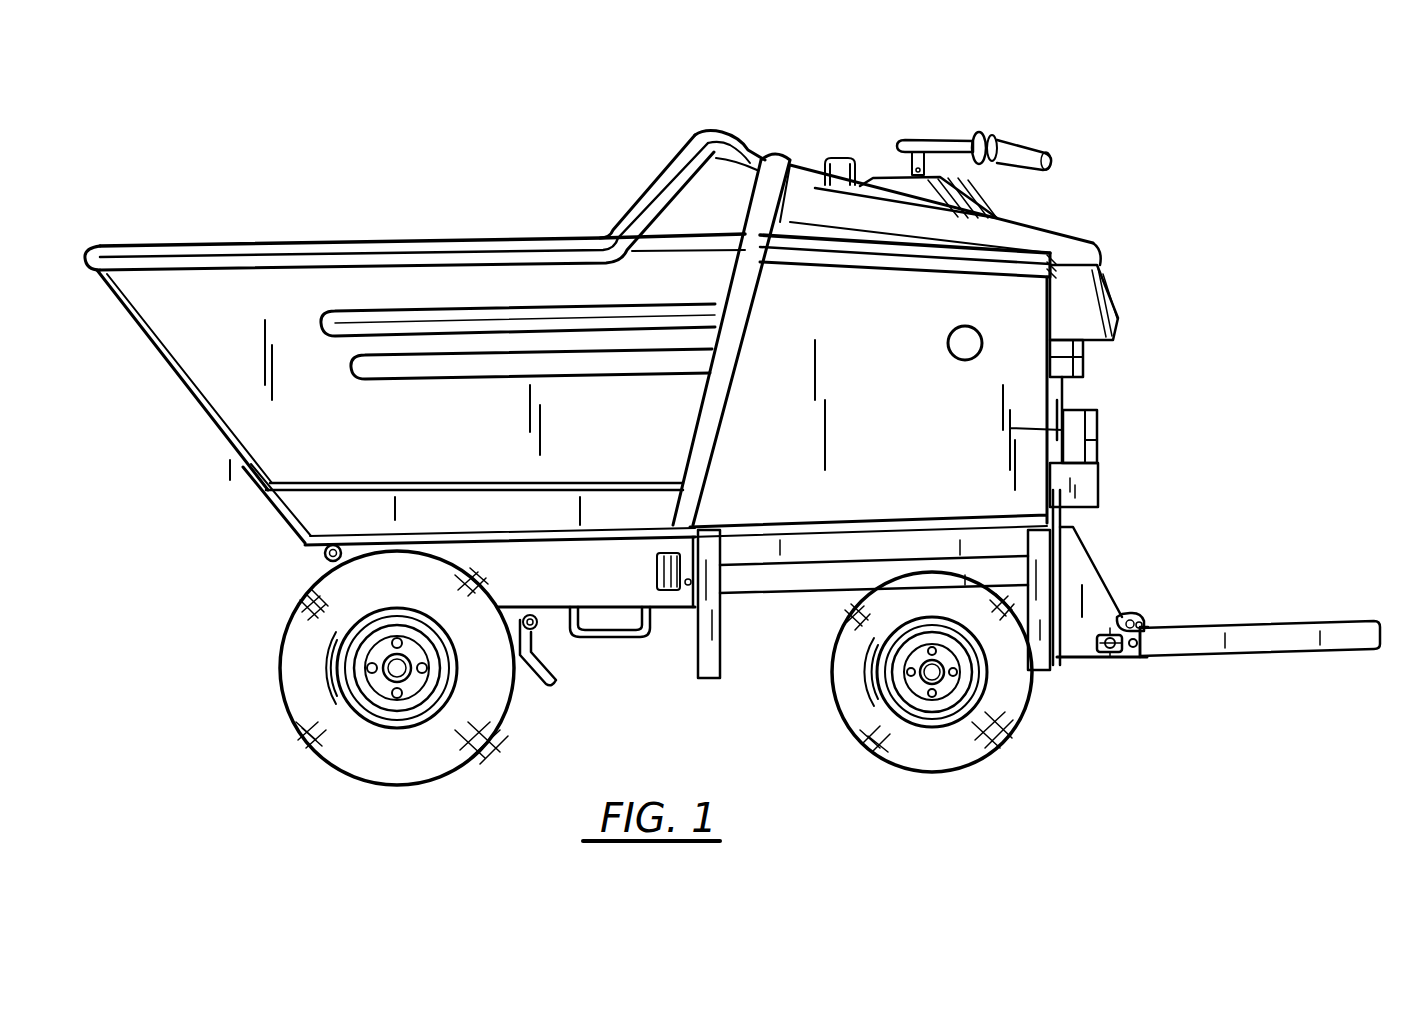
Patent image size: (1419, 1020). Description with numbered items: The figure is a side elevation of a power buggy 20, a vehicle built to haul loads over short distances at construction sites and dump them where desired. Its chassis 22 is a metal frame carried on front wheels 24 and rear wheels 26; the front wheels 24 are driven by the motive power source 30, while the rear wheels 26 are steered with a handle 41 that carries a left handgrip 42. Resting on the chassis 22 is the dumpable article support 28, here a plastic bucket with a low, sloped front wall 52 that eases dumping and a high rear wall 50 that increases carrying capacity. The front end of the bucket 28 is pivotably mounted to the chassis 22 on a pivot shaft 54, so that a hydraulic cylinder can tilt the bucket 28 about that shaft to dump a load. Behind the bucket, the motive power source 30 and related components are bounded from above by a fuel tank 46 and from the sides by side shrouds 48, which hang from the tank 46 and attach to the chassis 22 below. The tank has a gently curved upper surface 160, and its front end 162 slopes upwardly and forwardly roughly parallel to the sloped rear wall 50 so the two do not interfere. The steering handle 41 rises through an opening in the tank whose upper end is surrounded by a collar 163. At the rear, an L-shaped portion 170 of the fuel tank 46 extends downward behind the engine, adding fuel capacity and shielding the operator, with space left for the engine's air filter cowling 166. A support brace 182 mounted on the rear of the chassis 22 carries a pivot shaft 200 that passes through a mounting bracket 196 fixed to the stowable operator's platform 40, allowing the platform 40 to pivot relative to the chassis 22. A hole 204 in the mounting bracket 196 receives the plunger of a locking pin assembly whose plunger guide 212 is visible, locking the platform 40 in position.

The power buggy 20 is at (441, 160).
The chassis 22 is at (808, 593).
The front wheels 24 is at (290, 700).
The rear wheels 26 is at (995, 735).
The dumpable article support 28 is at (292, 242).
The motive power source 30 is at (1067, 387).
The stowable operator's platform 40 is at (1350, 622).
The handle 41 is at (940, 133).
The left handgrip 42 is at (1022, 143).
The fuel tank 46 is at (1038, 217).
The side shrouds 48 is at (1097, 421).
The rear wall 50 is at (768, 150).
The front wall 52 is at (218, 436).
The pivot shaft 54 is at (326, 559).
The upper surface 160 is at (1075, 236).
The front end 162 is at (788, 165).
The collar 163 is at (1005, 193).
The air filter cowling 166 is at (1085, 350).
The L-shaped portion 170 is at (1108, 273).
The support brace 182 is at (1087, 597).
The mounting bracket 196 is at (1126, 615).
The pivot shaft 200 is at (1136, 648).
The second hole 204 is at (1143, 626).
The plunger guide 212 is at (1096, 657).